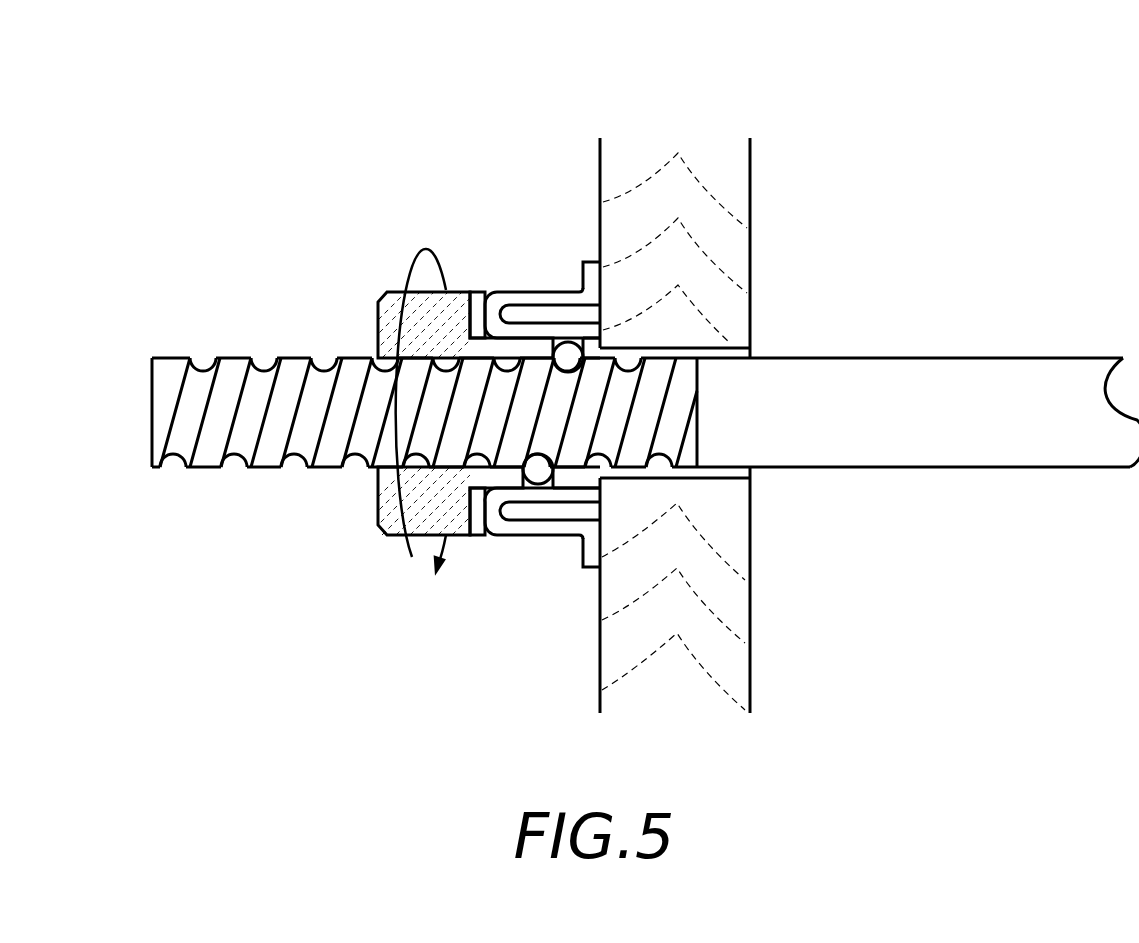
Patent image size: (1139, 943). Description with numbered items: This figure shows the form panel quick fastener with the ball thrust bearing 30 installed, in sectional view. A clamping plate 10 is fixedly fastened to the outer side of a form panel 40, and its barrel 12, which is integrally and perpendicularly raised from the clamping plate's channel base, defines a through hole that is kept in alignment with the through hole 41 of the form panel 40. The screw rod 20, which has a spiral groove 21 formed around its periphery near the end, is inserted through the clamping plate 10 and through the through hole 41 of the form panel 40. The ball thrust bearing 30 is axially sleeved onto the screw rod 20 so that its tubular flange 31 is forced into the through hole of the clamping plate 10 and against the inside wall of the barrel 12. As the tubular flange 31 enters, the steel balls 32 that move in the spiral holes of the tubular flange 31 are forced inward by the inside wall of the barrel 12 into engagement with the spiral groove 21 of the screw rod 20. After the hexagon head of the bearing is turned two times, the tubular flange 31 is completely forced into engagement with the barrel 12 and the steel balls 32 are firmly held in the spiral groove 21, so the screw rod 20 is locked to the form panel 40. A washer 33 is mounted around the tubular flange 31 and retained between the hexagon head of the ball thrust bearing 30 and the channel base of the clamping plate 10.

The clamping plate 10 is at (512, 293).
The barrel 12 is at (543, 503).
The screw rod 20 is at (264, 462).
The spiral groove 21 is at (237, 455).
The ball thrust bearing 30 is at (420, 303).
The tubular flange 31 is at (532, 343).
The steel ball 32 is at (533, 473).
The washer 33 is at (477, 303).
The form panel 40 is at (673, 193).
The through hole of form panel 41 is at (682, 348).